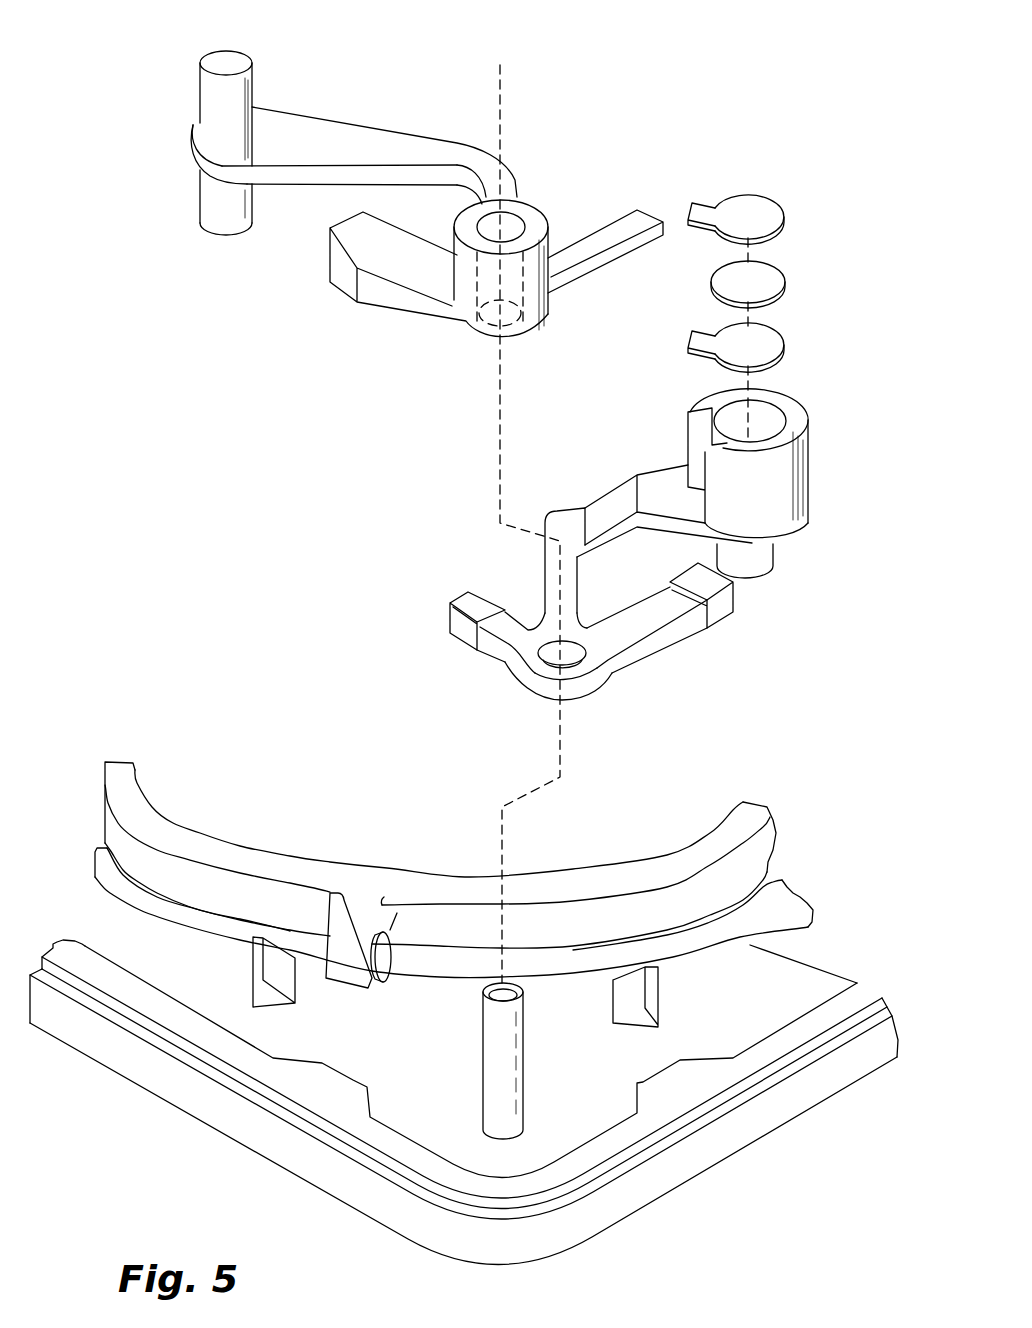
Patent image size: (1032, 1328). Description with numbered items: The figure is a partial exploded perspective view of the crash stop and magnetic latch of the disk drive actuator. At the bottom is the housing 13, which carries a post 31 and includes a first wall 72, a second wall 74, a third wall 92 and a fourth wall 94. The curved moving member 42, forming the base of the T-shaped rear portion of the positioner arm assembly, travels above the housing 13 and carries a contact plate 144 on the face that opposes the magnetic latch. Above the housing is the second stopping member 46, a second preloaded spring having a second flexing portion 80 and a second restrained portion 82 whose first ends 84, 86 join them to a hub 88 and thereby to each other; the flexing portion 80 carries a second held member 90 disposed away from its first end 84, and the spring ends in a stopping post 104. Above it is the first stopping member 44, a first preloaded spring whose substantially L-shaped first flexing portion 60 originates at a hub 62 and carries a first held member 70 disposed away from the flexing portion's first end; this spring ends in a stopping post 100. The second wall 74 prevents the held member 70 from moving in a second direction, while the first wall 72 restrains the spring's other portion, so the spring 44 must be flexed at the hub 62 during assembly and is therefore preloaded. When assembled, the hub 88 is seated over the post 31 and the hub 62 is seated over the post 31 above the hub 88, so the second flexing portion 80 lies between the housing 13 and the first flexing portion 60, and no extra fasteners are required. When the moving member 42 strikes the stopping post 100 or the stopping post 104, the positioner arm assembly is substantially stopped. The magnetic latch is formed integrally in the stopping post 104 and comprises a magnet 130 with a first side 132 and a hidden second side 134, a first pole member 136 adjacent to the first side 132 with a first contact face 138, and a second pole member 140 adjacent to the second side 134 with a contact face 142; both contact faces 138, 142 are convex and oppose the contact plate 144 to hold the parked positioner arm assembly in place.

The housing 13 is at (177, 1083).
The post 31 is at (493, 1068).
The moving member 42 is at (343, 975).
The first stopping member 44 is at (352, 112).
The second stopping member 46 is at (606, 476).
The first flexing portion 60 is at (512, 170).
The hub 62 is at (535, 217).
The first held member 70 is at (210, 208).
The first wall 72 is at (353, 1080).
The second wall 74 is at (255, 962).
The second flexing portion 80 is at (550, 562).
The second restrained portion 82 is at (655, 628).
The first end 84 is at (568, 594).
The first end 86 is at (607, 657).
The hub 88 is at (540, 685).
The second held member 90 is at (780, 557).
The third wall 92 is at (670, 1060).
The fourth wall 94 is at (658, 985).
The stopping post 100 is at (208, 98).
The stopping post 104 is at (803, 460).
The magnet 130 is at (784, 291).
The first side 132 is at (760, 267).
The second side 134 is at (776, 306).
The first pole member 136 is at (757, 202).
The first contact face 138 is at (697, 237).
The second pole member 140 is at (773, 347).
The contact face 142 is at (697, 363).
The contact plate 144 is at (392, 962).